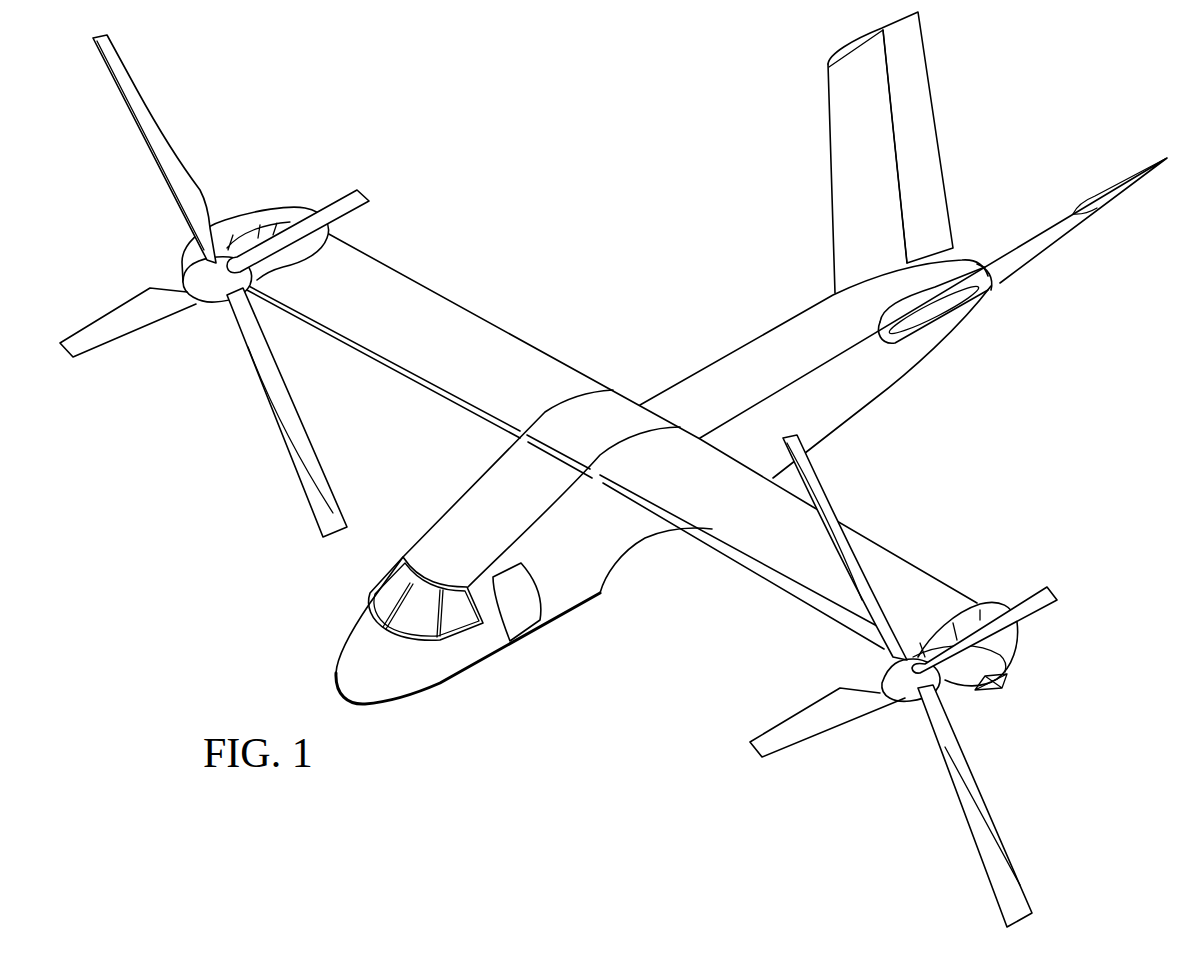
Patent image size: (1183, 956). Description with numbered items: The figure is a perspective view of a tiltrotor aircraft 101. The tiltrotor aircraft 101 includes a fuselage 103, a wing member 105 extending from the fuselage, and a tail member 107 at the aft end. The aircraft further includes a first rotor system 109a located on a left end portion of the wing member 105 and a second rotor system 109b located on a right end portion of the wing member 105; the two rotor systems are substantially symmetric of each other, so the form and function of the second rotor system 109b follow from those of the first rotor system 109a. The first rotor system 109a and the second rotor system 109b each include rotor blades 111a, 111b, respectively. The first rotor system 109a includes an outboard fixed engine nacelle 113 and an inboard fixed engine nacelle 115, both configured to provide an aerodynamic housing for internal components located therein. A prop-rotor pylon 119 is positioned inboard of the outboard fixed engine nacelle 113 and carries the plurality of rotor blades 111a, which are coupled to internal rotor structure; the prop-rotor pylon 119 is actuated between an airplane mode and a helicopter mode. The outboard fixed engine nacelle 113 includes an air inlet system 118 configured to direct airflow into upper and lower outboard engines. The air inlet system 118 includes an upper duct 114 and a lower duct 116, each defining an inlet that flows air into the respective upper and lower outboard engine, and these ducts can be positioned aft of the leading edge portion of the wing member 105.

The tiltrotor aircraft 101 is at (282, 629).
The fuselage 103 is at (437, 685).
The wing member 105 is at (457, 306).
The tail member 107 is at (937, 110).
The first rotor system 109a is at (854, 760).
The second rotor system 109b is at (175, 352).
The rotor blades 111a is at (793, 713).
The rotor blades 111b is at (100, 317).
The outboard fixed engine nacelle 113 is at (1017, 647).
The upper duct 114 is at (1007, 677).
The inboard fixed engine nacelle 115 is at (993, 603).
The lower duct 116 is at (993, 690).
The air inlet system 118 is at (976, 714).
The prop-rotor pylon 119 is at (935, 619).